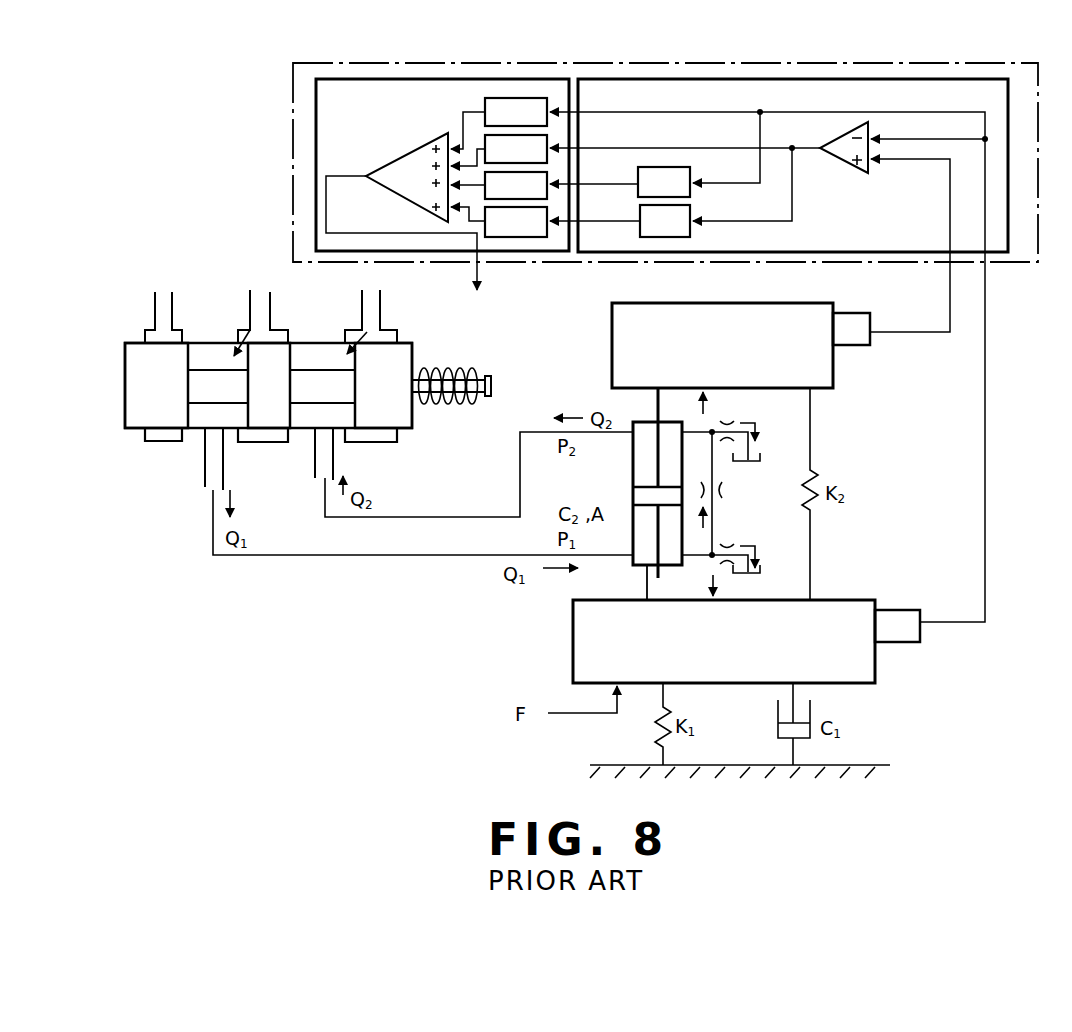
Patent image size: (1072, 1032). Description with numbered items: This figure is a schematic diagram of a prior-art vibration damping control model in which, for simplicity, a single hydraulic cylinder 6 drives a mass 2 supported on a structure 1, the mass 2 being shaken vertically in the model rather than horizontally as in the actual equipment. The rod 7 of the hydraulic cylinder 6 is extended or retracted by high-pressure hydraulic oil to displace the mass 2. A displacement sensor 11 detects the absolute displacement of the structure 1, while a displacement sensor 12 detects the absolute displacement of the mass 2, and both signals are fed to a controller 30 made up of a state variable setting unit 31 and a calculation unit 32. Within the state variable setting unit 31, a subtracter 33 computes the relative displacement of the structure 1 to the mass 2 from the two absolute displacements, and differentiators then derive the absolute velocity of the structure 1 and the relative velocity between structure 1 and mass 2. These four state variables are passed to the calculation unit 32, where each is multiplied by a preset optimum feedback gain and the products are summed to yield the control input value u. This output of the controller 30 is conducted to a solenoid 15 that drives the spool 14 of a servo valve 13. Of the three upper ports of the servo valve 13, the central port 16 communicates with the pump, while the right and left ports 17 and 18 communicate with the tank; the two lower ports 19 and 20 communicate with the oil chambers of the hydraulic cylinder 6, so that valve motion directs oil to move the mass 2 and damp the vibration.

The structure 1 is at (764, 620).
The mass 2 is at (769, 360).
The hydraulic cylinder 6 is at (683, 484).
The rod 7 is at (655, 390).
The displacement sensor 11 is at (895, 610).
The displacement sensor 12 is at (858, 343).
The servo valve 13 is at (283, 379).
The spool 14 is at (195, 382).
The solenoid 15 is at (440, 358).
The central port 16 is at (263, 313).
The port 17 is at (156, 300).
The port 18 is at (380, 308).
The lower port 19 is at (330, 462).
The lower port 20 is at (207, 468).
The controller 30 is at (637, 63).
The state variable setting unit 31 is at (779, 315).
The calculation unit 32 is at (385, 78).
The subtracter 33 is at (846, 173).